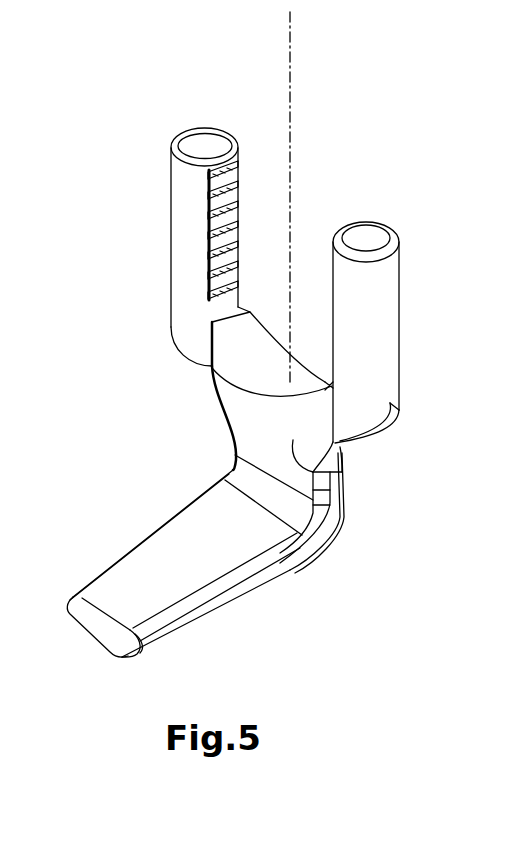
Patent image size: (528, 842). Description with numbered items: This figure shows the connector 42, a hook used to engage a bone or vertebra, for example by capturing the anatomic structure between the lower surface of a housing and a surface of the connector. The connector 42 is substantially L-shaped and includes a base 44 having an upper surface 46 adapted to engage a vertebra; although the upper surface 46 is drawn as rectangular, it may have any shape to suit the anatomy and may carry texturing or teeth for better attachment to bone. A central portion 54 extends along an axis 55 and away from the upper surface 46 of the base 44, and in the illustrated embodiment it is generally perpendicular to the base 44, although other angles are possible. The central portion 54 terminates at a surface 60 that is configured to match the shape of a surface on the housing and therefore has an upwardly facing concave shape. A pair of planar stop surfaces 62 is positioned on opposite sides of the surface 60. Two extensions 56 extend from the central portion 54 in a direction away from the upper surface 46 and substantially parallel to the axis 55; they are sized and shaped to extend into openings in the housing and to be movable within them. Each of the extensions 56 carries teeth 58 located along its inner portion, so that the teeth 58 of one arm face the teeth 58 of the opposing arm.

The connector 42 is at (170, 447).
The base 44 is at (273, 553).
The upper surface 46 is at (183, 571).
The central portion 54 is at (347, 470).
The axis 55 is at (290, 78).
The extensions 56 is at (186, 236).
The teeth 58 is at (231, 202).
The surface 60 is at (257, 347).
The planar stop surfaces 62 is at (217, 314).